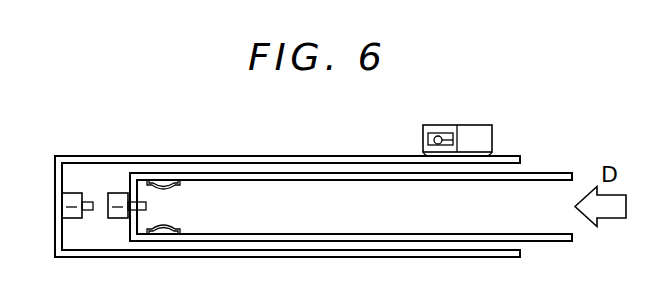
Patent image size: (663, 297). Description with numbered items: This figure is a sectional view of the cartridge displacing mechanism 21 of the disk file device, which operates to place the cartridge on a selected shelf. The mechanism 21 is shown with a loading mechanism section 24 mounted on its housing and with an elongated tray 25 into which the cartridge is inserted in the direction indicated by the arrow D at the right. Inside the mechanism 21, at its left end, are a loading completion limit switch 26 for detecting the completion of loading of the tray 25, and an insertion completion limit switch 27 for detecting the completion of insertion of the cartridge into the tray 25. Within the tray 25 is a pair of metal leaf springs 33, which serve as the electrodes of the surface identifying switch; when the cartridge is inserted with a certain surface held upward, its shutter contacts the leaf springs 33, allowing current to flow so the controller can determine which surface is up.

The cartridge displacing mechanism 21 is at (354, 144).
The loading mechanism section 24 is at (442, 124).
The tray 25 is at (537, 172).
The loading completion limit switch 26 is at (73, 192).
The insertion completion limit switch 27 is at (121, 192).
The metal leaf springs 33 is at (172, 192).